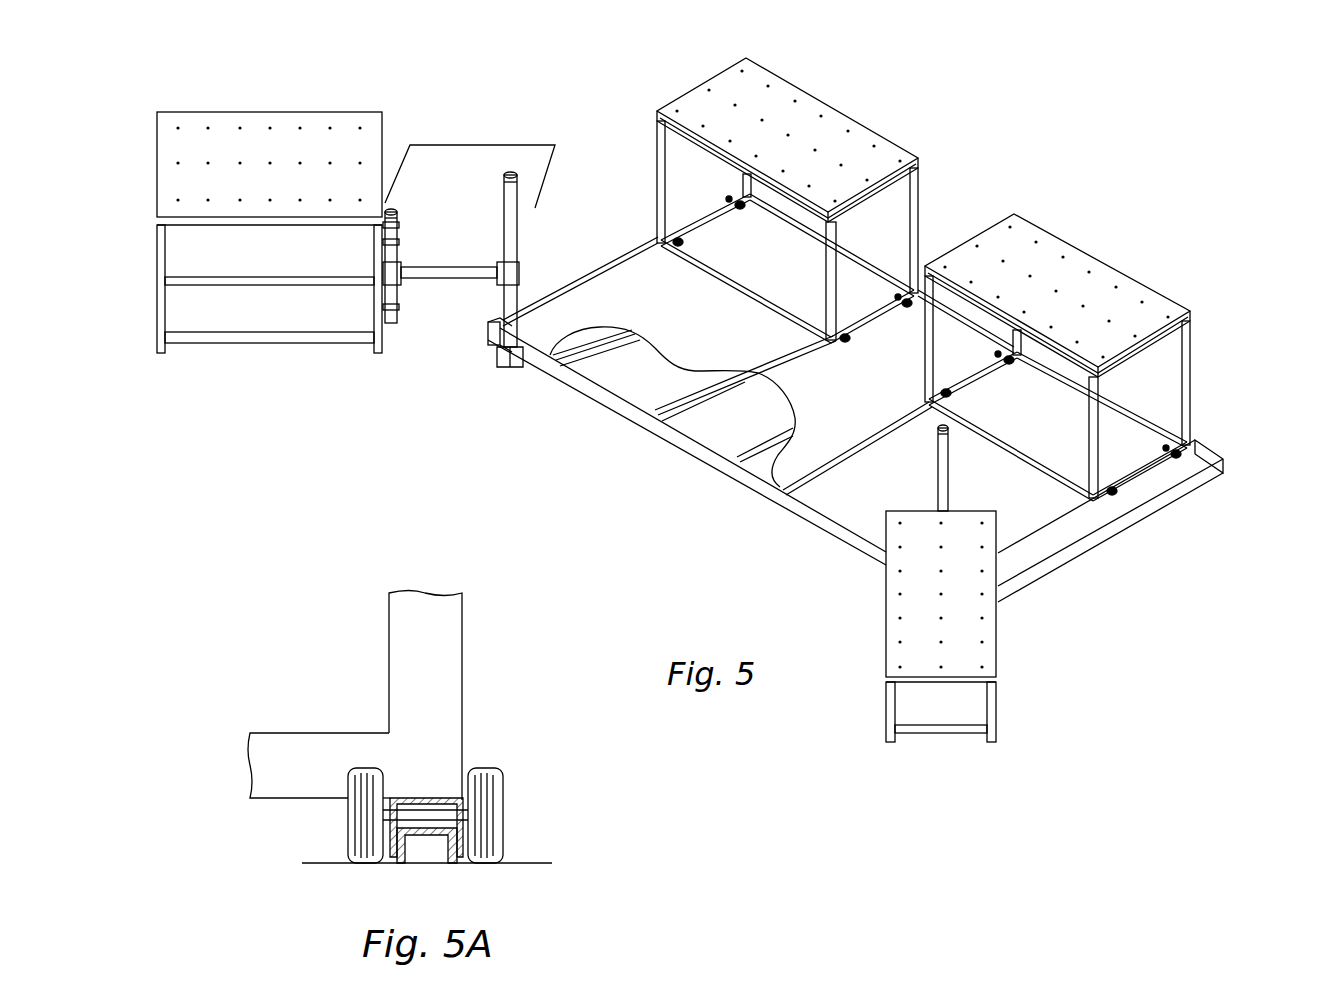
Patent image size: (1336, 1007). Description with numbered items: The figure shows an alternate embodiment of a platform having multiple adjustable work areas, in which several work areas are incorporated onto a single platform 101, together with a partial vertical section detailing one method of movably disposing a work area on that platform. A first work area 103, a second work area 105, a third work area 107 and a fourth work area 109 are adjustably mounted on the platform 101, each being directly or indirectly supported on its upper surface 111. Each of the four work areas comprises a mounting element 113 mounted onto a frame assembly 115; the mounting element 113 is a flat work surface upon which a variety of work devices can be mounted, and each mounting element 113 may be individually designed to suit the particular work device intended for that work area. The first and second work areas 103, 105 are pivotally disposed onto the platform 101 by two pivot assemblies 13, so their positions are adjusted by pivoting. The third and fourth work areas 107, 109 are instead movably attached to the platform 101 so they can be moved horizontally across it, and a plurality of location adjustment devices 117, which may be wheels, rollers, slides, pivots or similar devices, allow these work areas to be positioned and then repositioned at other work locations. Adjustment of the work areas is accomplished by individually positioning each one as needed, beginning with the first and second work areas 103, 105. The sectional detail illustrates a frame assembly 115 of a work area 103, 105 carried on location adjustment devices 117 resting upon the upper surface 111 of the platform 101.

In FIG. 5, the pivot assembly 13 is at (470, 228).
In FIG. 5, the platform 101 is at (864, 423).
In FIG. 5, the first work area 103 is at (242, 225).
In FIG. 5A, the first work area 103 is at (480, 696).
In FIG. 5, the second work area 105 is at (949, 583).
In FIG. 5A, the second work area 105 is at (319, 765).
In FIG. 5, the third work area 107 is at (1119, 362).
In FIG. 5, the fourth work area 109 is at (807, 198).
In FIG. 5, the upper surface 111 is at (846, 476).
In FIG. 5A, the upper surface 111 is at (471, 835).
In FIG. 5, the mounting element 113 is at (703, 391).
In FIG. 5, the frame assembly 115 is at (703, 391).
In FIG. 5, the location adjustment device 117 is at (703, 391).
In FIG. 5A, the location adjustment device 117 is at (475, 795).